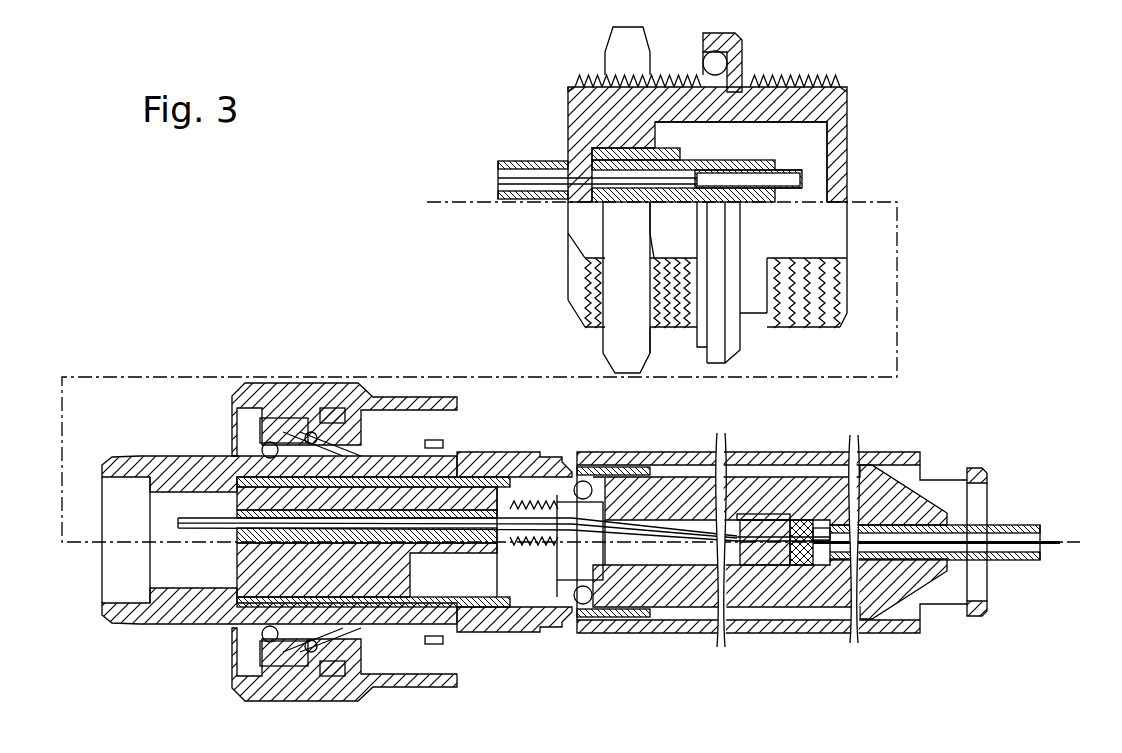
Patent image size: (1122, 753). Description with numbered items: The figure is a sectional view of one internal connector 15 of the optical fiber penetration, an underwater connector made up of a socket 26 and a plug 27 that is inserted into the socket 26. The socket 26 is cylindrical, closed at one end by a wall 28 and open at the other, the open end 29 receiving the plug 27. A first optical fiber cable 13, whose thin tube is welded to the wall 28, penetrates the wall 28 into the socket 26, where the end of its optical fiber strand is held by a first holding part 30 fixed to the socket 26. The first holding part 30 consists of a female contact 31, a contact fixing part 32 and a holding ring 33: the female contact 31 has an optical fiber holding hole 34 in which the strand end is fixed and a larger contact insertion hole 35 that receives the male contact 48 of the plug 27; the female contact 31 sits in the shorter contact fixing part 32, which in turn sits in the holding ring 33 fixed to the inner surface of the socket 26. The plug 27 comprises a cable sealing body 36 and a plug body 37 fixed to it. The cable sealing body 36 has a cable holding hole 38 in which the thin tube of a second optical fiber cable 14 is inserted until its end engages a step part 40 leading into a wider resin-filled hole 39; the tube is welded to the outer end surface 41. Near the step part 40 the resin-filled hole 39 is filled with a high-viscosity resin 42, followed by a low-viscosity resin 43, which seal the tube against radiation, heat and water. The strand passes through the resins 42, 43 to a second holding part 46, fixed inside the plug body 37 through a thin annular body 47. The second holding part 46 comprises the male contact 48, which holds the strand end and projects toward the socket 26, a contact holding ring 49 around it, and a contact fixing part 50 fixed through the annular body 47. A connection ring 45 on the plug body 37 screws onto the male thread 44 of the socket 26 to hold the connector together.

The first optical fiber cable 13 is at (490, 158).
The second optical fiber cable 14 is at (1046, 521).
The internal connector 15 is at (292, 211).
The socket 26 is at (458, 78).
The plug 27 is at (906, 426).
The wall 28 is at (568, 137).
The open end 29 is at (835, 132).
The first holding part 30 is at (795, 200).
The female contact 31 is at (801, 170).
The contact fixing part 32 is at (752, 160).
The holding ring 33 is at (683, 150).
The optical fiber holding hole 34 is at (662, 182).
The contact insertion hole 35 is at (800, 179).
The cable sealing body 36 is at (747, 452).
The plug body 37 is at (190, 455).
The cable holding hole 38 is at (900, 553).
The resin-filled hole 39 is at (777, 516).
The step part 40 is at (822, 530).
The outer end surface 41 is at (953, 510).
The high-viscosity resin 42 is at (795, 565).
The low-viscosity resin 43 is at (745, 565).
The male thread 44 is at (805, 82).
The connection ring 45 is at (328, 383).
The second holding part 46 is at (480, 495).
The thin annular body 47 is at (500, 607).
The male contact 48 is at (210, 530).
The contact holding ring 49 is at (462, 545).
The contact fixing part 50 is at (477, 483).